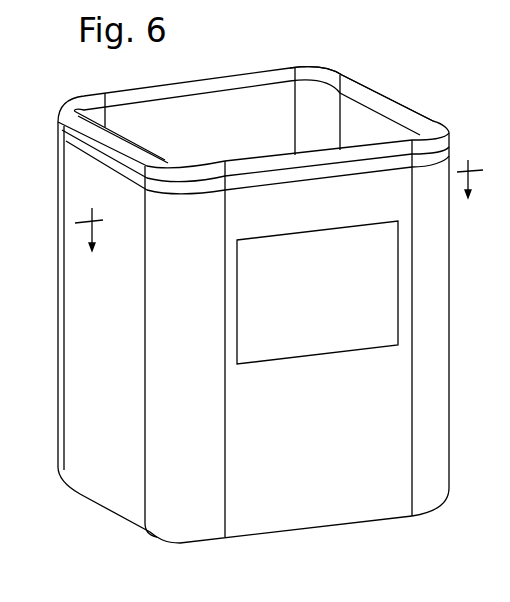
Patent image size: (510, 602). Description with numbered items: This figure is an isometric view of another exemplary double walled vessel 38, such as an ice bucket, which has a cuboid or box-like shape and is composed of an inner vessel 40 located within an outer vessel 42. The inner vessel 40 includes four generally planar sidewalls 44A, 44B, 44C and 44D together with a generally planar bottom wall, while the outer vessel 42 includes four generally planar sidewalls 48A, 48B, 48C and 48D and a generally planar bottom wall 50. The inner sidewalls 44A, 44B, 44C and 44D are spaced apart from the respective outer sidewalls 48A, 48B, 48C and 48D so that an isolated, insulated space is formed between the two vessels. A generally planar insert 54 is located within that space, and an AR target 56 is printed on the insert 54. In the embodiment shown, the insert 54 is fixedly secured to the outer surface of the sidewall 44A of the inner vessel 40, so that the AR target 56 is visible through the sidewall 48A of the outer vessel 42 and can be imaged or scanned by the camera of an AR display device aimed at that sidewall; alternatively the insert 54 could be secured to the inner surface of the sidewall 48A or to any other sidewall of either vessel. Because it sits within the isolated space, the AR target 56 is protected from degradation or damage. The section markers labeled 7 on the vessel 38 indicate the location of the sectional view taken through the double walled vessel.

The double walled vessel 38 is at (368, 90).
The inner vessel 40 is at (368, 130).
The outer vessel 42 is at (434, 123).
The sidewall 44A is at (283, 157).
The sidewall 44B is at (140, 140).
The sidewall 44C is at (205, 110).
The sidewall 44D is at (350, 138).
The sidewall 48A is at (342, 472).
The sidewall 48B is at (107, 442).
The sidewall 48C is at (147, 88).
The sidewall 48D is at (363, 78).
The bottom wall 50 is at (333, 528).
The insert 54 is at (302, 340).
The AR target 56 is at (325, 280).
The section line for FIG. 7 is at (280, 205).